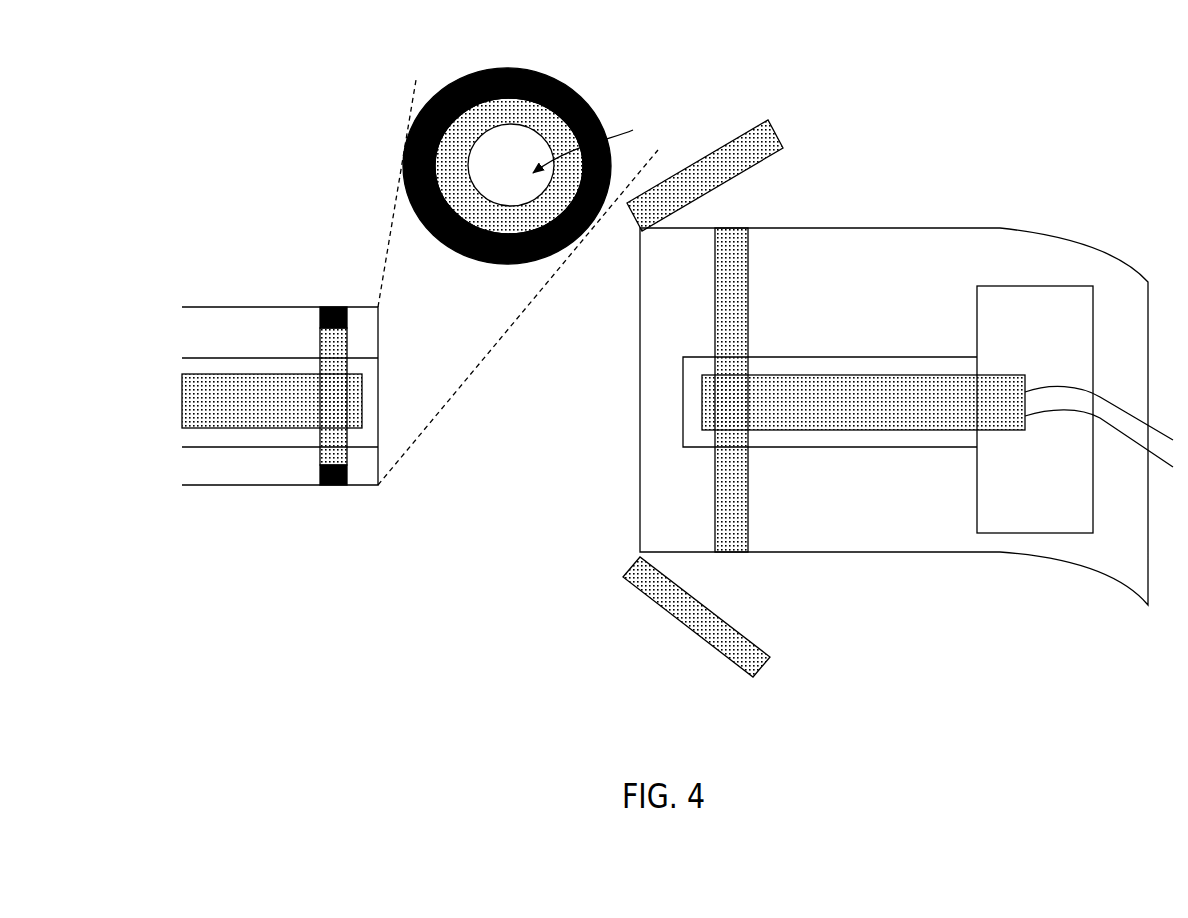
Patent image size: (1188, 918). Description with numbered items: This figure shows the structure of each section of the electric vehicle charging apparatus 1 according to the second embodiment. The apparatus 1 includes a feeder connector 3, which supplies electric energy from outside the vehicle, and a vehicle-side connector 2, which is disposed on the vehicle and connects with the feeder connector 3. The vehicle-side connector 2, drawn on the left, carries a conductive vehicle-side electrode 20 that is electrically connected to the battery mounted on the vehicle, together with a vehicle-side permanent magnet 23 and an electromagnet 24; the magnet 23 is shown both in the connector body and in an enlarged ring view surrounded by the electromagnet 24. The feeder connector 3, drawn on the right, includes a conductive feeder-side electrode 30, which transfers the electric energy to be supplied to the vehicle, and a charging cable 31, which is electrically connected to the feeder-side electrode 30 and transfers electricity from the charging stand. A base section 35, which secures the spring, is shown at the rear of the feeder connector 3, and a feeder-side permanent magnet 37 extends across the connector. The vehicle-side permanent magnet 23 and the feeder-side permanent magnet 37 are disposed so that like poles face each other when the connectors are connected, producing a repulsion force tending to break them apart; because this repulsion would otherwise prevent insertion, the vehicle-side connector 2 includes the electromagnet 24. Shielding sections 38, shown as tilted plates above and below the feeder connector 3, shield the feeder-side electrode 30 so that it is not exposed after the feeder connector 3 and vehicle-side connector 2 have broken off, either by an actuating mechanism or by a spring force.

The electric vehicle charging apparatus 1 is at (275, 128).
The vehicle-side connector 2 is at (248, 307).
The feeder connector 3 is at (868, 228).
The vehicle-side electrode 20 is at (225, 403).
The vehicle-side permanent magnet 23 is at (318, 450).
The electromagnet 24 is at (352, 471).
The feeder-side electrode 30 is at (772, 398).
The charging cable 31 is at (1117, 430).
The base section 35 is at (1070, 350).
The feeder-side permanent magnet 37 is at (730, 532).
The shielding section 38 is at (780, 132).